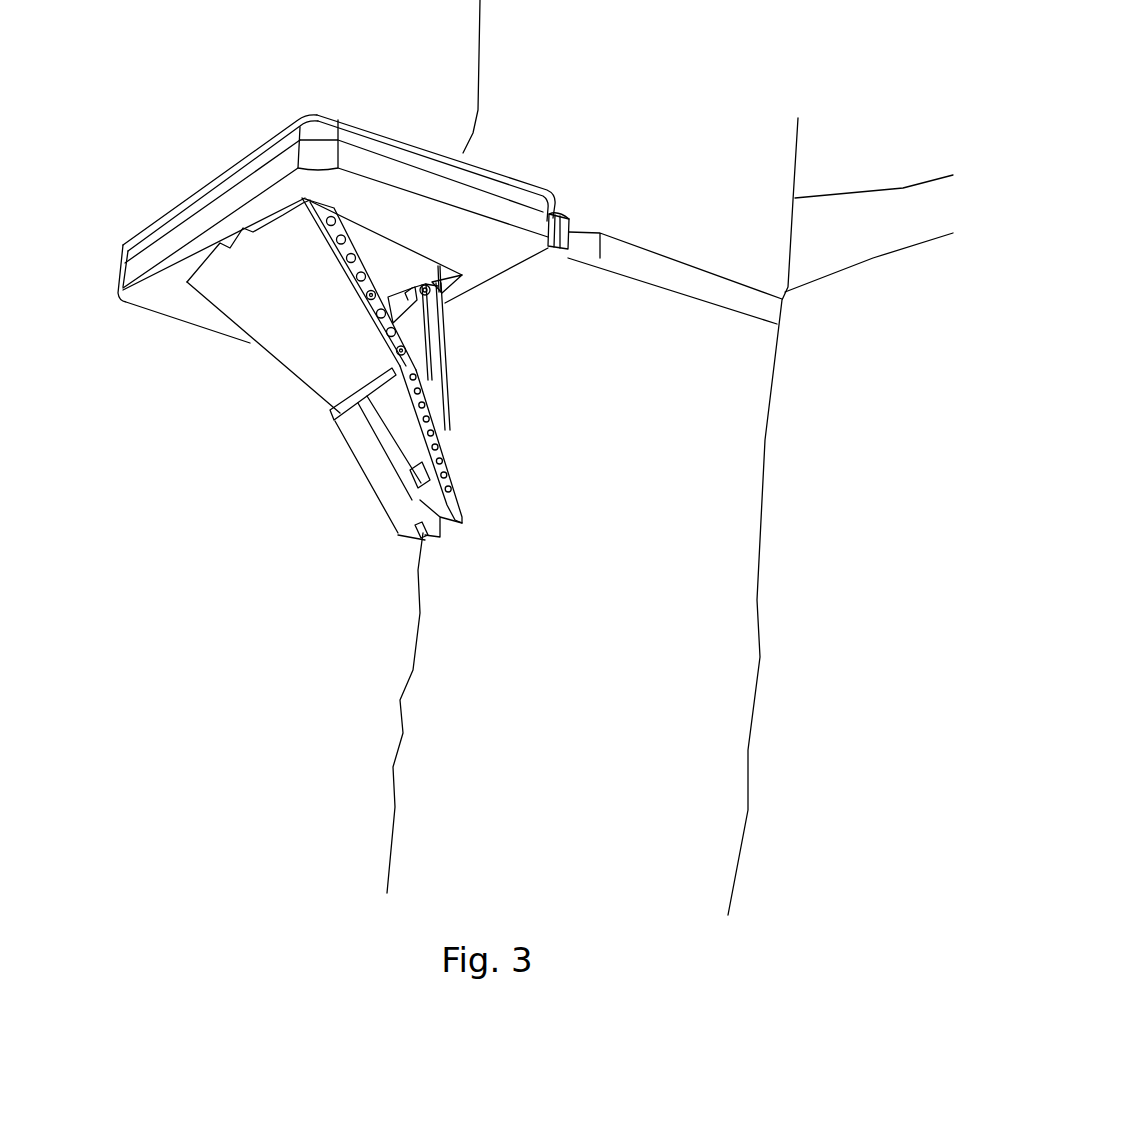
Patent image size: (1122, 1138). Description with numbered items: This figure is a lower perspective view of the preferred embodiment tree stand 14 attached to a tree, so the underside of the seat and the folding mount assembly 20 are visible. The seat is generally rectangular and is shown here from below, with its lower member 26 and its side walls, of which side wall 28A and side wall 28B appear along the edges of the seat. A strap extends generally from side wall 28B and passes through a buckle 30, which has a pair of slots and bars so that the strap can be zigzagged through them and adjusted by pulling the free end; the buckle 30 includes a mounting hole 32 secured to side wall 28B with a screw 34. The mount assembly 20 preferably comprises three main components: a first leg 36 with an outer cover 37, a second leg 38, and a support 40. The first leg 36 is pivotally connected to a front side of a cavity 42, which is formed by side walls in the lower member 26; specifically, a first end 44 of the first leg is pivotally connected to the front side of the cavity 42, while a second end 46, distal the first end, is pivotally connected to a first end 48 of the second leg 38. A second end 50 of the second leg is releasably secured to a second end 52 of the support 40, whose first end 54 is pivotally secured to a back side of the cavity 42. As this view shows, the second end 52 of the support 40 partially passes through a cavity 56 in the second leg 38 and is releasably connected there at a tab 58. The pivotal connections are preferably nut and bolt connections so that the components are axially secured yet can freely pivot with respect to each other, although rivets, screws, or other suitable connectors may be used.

The tree stand 14 is at (708, 92).
The mount assembly 20 is at (133, 509).
The lower member 26 is at (147, 293).
The side wall 28A is at (200, 200).
The side wall 28B is at (363, 133).
The buckle 30 is at (606, 186).
The mounting hole 32 is at (553, 243).
The screw 34 is at (556, 222).
The first leg 36 is at (357, 263).
The outer cover 37 is at (263, 298).
The second leg 38 is at (378, 452).
The support 40 is at (443, 370).
The cavity 42 is at (360, 233).
The first end of first leg 44 is at (285, 237).
The second end of first leg 46 is at (333, 395).
The first end of second leg 48 is at (358, 422).
The second end of second leg 50 is at (422, 532).
The second end of support 52 is at (407, 492).
The first end of support 54 is at (448, 302).
The cavity in second leg 56 is at (378, 500).
The tab 58 is at (418, 472).